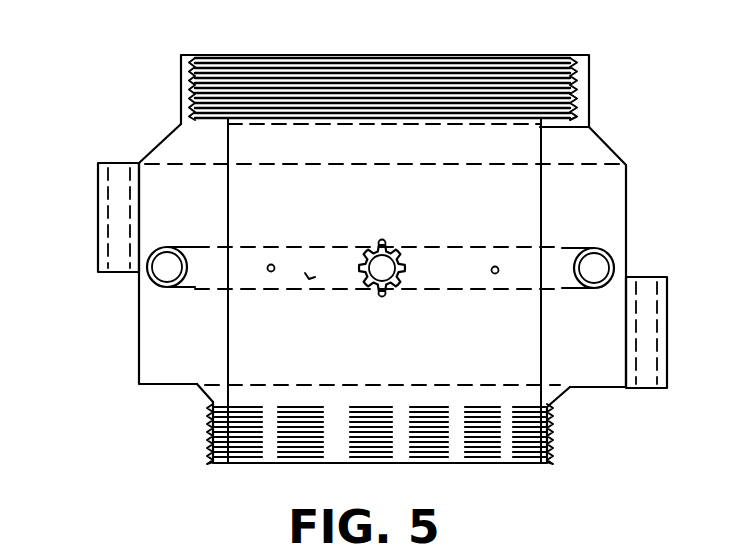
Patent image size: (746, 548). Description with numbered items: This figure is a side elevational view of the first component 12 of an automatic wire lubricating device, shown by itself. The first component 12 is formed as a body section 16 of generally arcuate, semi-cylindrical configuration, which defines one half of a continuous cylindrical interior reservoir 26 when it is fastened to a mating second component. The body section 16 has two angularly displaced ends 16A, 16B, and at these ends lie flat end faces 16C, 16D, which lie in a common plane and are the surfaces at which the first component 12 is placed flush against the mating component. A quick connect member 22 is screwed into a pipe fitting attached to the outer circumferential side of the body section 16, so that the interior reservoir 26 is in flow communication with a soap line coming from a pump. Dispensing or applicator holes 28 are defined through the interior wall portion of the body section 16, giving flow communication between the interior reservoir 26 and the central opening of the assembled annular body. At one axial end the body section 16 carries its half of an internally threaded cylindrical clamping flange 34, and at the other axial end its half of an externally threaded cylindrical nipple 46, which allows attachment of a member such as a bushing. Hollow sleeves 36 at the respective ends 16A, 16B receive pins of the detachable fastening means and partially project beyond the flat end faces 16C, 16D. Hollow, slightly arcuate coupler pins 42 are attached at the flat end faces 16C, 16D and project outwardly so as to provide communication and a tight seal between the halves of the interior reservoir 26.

The first component 12 is at (608, 90).
The body section 16 is at (627, 185).
The angularly displaced end 16A is at (612, 147).
The angularly displaced end 16B is at (153, 153).
The flat end face 16C is at (608, 380).
The flat end face 16D is at (148, 370).
The quick connect member 22 is at (399, 249).
The interior reservoir 26 is at (310, 268).
The dispensing or applicator holes 28 is at (492, 273).
The internally threaded cylindrical clamping flange 34 is at (488, 55).
The sleeves 36 is at (97, 242).
The coupler pins 42 is at (138, 294).
The externally threaded cylindrical nipple 46 is at (549, 450).